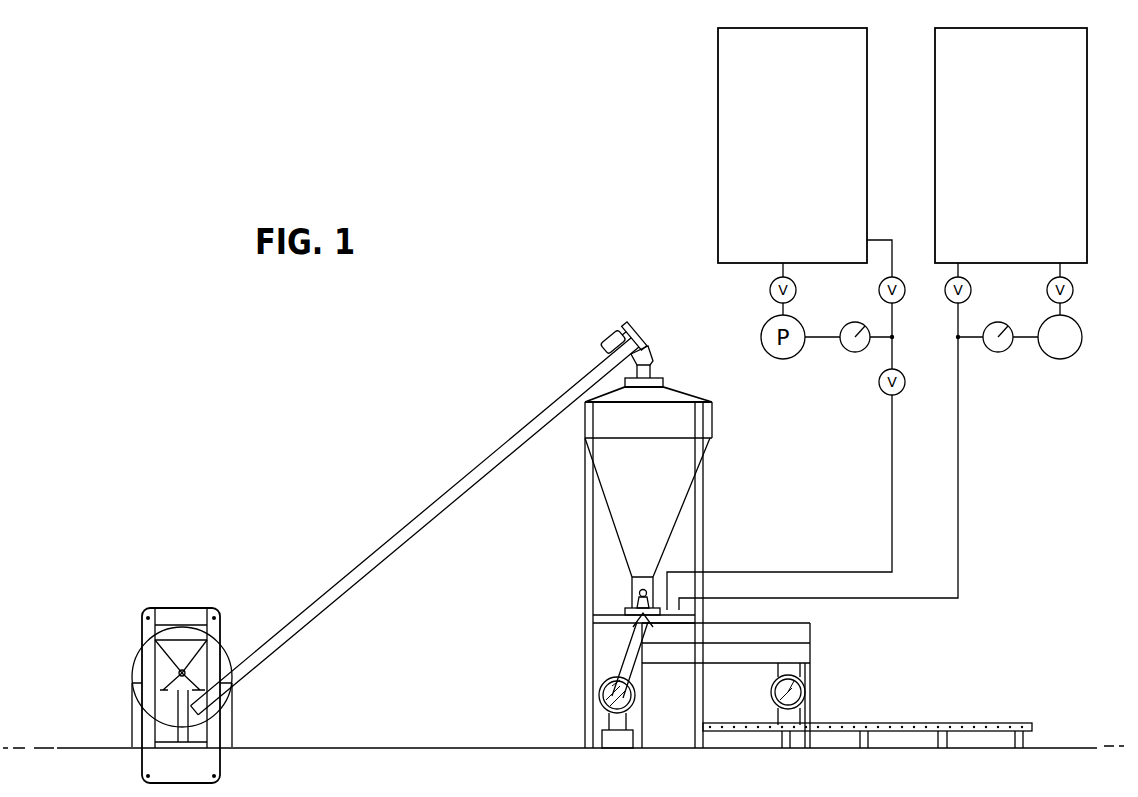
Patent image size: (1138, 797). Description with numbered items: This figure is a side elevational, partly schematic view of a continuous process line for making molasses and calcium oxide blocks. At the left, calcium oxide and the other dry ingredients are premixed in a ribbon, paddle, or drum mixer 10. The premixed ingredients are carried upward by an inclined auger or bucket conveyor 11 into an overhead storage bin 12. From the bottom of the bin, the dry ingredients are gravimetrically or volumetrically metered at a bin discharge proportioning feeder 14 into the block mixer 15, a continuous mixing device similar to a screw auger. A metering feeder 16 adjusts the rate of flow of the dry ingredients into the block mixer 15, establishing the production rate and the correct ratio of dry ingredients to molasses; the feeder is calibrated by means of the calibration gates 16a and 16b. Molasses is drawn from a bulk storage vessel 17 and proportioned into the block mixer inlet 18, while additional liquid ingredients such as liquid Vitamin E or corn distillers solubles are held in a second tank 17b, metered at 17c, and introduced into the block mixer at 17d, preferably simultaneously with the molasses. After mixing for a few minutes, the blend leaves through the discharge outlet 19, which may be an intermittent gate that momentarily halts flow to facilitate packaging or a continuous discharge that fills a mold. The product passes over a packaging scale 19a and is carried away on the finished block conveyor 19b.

The mixer 10 is at (208, 608).
The bucket conveyor 11 is at (421, 514).
The overhead storage bin 12 is at (604, 500).
The bin discharge proportioning feeder 14 is at (628, 584).
The block mixer 15 is at (780, 619).
The metering feeder 16 is at (637, 596).
The calibration gate 16a is at (622, 622).
The calibration gate 16b is at (599, 697).
The bulk storage vessel 17 is at (732, 212).
The tank 17b is at (1073, 204).
The metering point for additional liquid ingredients 17c is at (1052, 362).
The block mixer addition point for additional liquids 17d is at (736, 592).
The block mixer inlet 18 is at (678, 571).
The discharge outlet 19 is at (818, 660).
The packaging scale 19a is at (801, 690).
The finished block conveyor 19b is at (930, 724).